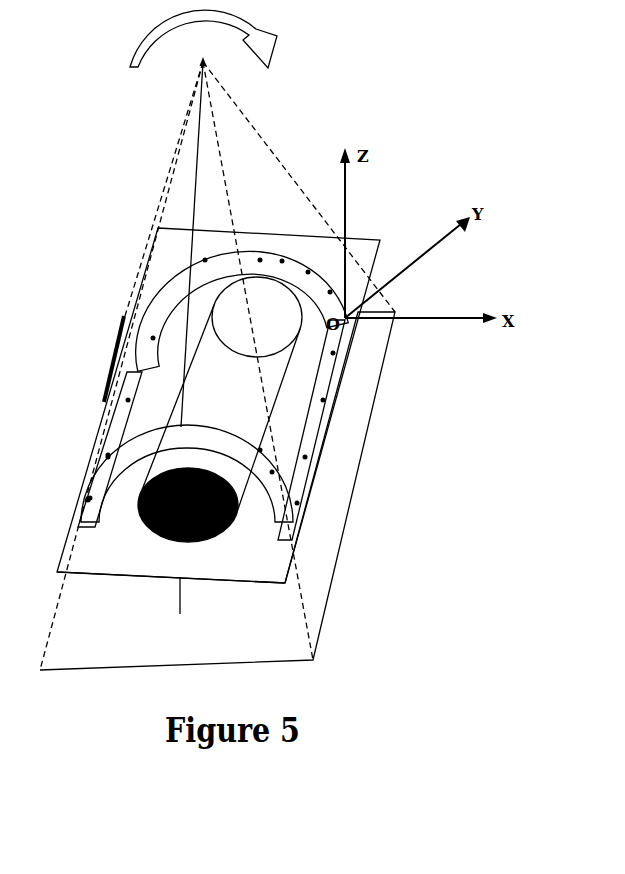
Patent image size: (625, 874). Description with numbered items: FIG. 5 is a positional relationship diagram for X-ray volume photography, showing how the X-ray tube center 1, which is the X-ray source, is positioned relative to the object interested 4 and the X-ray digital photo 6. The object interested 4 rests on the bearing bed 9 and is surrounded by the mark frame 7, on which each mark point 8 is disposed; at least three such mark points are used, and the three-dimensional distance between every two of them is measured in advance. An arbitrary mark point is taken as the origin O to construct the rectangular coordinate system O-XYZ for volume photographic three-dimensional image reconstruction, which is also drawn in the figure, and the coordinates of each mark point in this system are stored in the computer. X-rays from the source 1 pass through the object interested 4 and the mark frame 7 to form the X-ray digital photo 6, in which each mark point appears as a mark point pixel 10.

The X-ray tube center 1 is at (217, 340).
The object interested 4 is at (185, 373).
The X-ray digital photo 6 is at (365, 400).
The mark frame 7 is at (157, 300).
The mark point 8 is at (128, 442).
The bearing bed 9 is at (295, 530).
The mark point pixel 10 is at (177, 614).